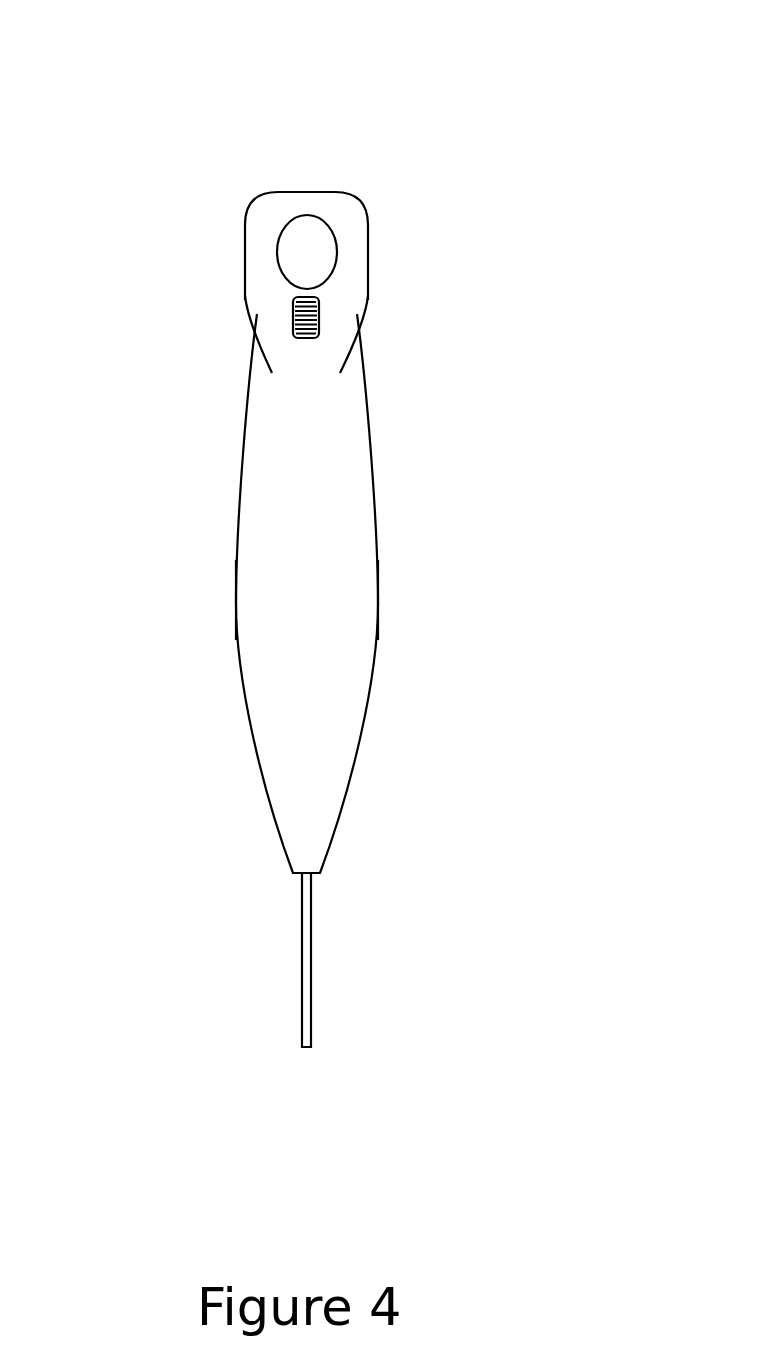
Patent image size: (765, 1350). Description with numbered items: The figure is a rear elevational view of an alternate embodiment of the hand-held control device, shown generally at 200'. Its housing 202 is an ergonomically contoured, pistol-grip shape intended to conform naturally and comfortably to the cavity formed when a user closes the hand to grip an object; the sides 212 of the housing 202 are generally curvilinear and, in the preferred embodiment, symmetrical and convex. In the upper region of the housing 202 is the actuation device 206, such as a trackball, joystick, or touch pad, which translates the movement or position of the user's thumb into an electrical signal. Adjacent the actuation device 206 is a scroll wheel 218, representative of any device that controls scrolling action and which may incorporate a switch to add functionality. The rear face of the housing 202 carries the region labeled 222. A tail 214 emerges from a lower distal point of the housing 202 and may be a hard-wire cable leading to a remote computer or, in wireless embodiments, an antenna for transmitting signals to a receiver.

The control device 200' is at (307, 530).
The housing 202 is at (360, 420).
The actuation device 206 is at (292, 257).
The sides 212 is at (236, 604).
The tail 214 is at (306, 956).
The scroll wheel 218 is at (318, 312).
The grip surface 222 is at (333, 563).